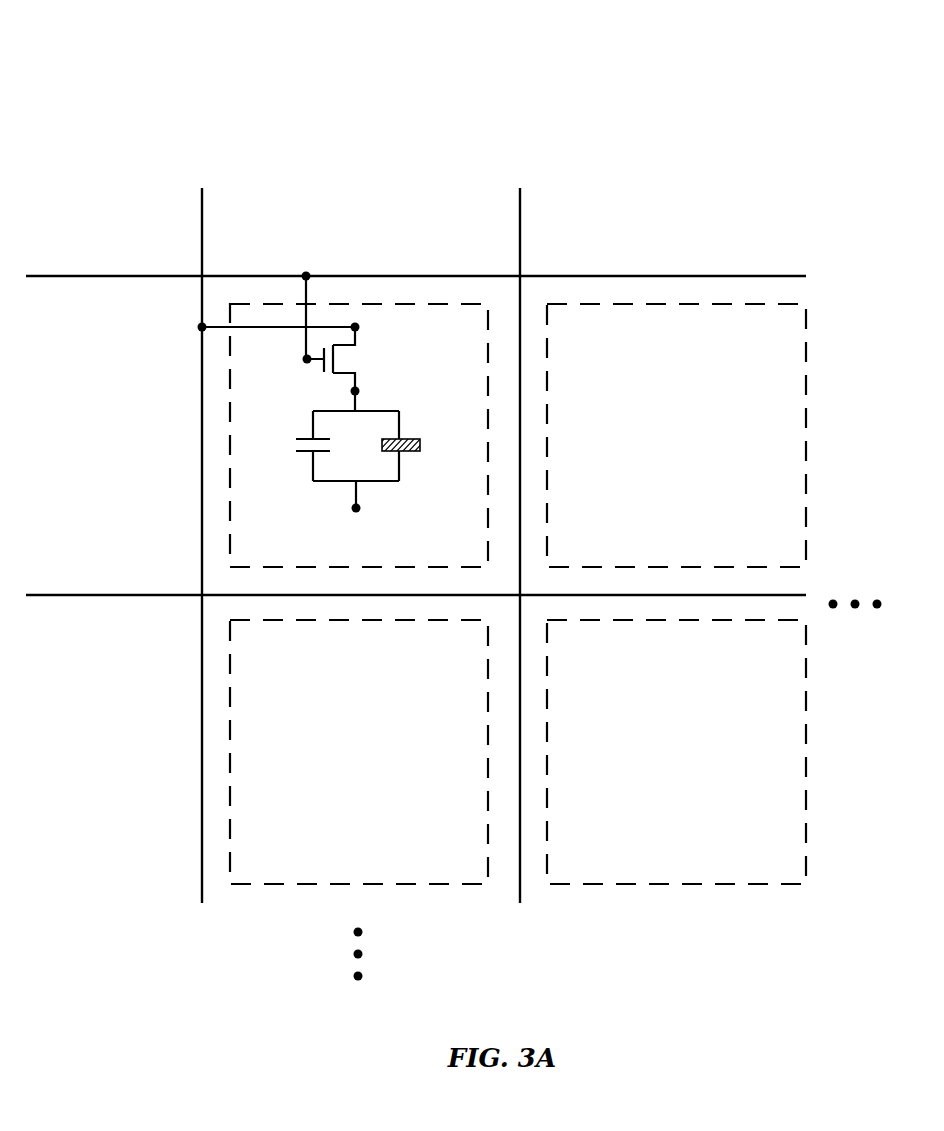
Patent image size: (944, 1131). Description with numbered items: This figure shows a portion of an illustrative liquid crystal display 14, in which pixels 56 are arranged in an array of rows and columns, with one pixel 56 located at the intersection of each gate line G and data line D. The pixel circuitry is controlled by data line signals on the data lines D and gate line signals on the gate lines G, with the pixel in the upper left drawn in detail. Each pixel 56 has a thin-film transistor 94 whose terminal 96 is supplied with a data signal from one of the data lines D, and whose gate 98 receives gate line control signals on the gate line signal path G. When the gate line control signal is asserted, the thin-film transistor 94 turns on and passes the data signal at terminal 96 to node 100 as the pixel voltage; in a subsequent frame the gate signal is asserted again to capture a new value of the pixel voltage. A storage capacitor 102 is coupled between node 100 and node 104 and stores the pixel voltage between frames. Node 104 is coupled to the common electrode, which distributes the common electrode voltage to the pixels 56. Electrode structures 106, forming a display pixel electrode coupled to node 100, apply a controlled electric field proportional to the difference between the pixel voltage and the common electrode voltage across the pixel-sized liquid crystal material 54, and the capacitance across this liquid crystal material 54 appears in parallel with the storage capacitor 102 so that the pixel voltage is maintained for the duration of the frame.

The display 14 is at (648, 81).
The liquid crystal material 54 is at (422, 446).
The pixel 56 is at (418, 303).
The thin-film transistor 94 is at (333, 321).
The terminal 96 is at (359, 327).
The gate 98 is at (303, 359).
The node 100 is at (348, 391).
The storage capacitor 102 is at (301, 456).
The node 104 is at (350, 508).
The electrode structures 106 is at (410, 439).